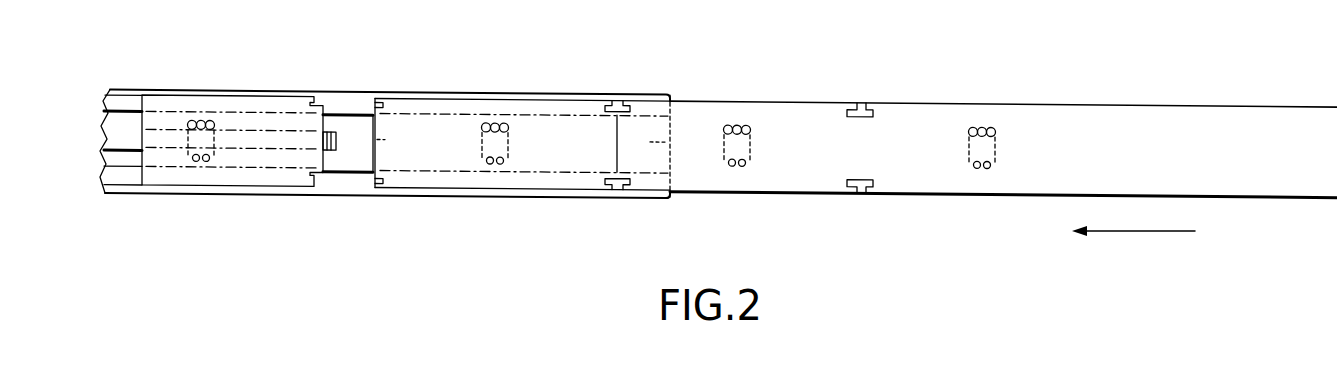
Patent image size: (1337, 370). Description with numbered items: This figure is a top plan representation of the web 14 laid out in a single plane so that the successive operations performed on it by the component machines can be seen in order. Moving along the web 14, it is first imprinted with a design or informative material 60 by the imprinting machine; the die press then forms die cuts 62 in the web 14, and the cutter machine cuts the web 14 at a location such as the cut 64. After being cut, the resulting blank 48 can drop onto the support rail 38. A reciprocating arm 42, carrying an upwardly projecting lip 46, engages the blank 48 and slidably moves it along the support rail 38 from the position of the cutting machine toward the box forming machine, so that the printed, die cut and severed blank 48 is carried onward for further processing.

The web 14 is at (1238, 116).
The support rail 38 is at (367, 97).
The reciprocating arm 42 is at (122, 133).
The upwardly projecting lip 46 is at (333, 151).
The blank 48 is at (245, 173).
The design or informative material 60 is at (502, 168).
The die cuts 62 is at (862, 105).
The cut 64 is at (617, 145).